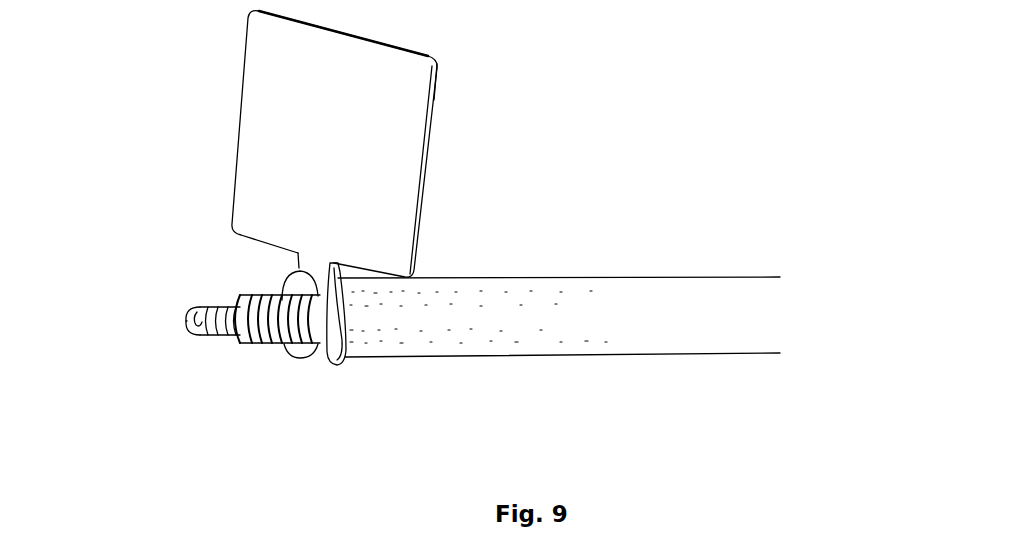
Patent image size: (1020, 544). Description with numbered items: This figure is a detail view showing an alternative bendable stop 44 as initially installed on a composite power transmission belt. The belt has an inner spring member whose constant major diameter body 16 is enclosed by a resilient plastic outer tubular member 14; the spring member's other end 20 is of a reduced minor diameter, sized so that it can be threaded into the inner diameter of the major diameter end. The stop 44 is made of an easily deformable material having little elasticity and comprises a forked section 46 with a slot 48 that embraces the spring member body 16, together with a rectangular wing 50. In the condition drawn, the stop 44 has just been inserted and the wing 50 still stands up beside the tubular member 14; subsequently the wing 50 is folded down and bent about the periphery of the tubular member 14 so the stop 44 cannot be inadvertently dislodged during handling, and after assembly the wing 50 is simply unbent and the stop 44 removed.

The outer tubular member 14 is at (618, 285).
The major diameter body 16 is at (255, 340).
The reduced minor diameter end 20 is at (198, 302).
The stop 44 is at (437, 62).
The forked section 46 is at (342, 353).
The slot 48 is at (310, 345).
The rectangular wing 50 is at (230, 147).